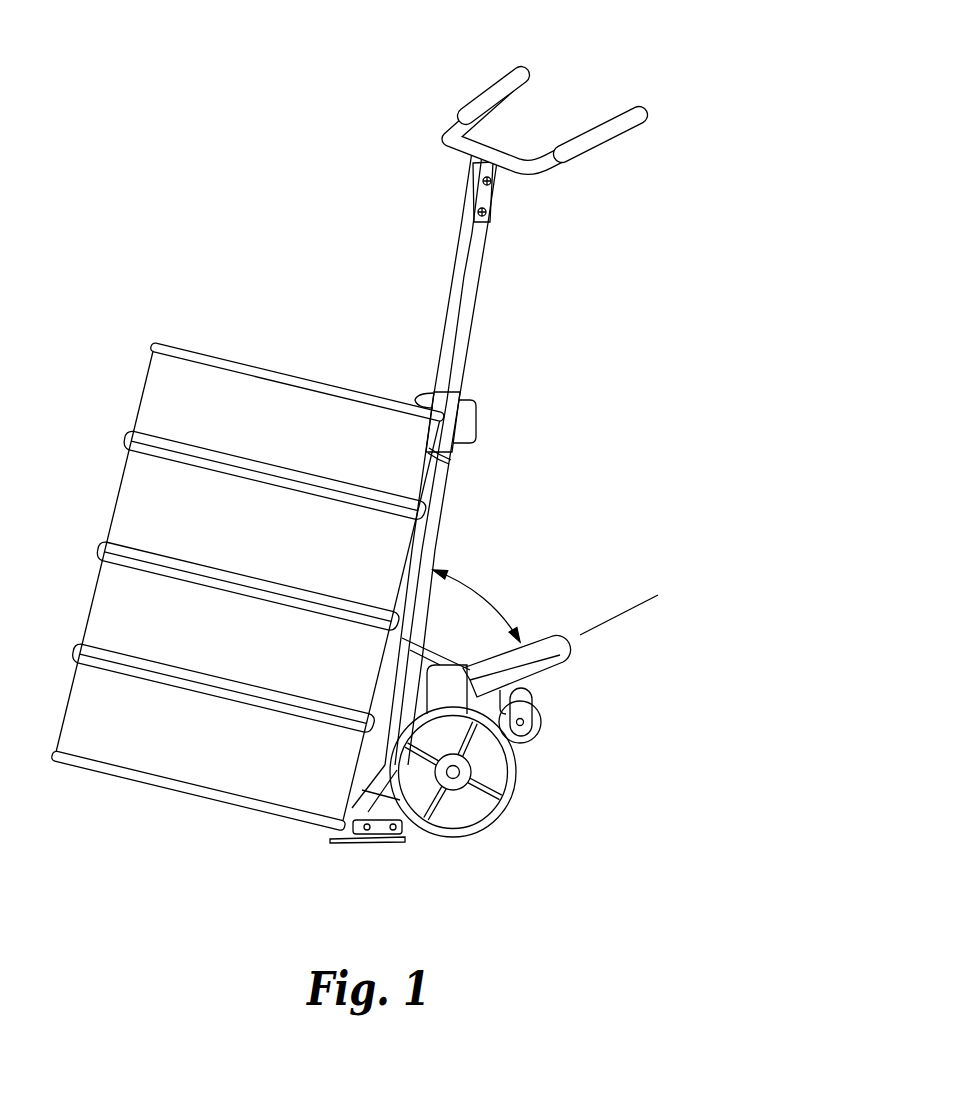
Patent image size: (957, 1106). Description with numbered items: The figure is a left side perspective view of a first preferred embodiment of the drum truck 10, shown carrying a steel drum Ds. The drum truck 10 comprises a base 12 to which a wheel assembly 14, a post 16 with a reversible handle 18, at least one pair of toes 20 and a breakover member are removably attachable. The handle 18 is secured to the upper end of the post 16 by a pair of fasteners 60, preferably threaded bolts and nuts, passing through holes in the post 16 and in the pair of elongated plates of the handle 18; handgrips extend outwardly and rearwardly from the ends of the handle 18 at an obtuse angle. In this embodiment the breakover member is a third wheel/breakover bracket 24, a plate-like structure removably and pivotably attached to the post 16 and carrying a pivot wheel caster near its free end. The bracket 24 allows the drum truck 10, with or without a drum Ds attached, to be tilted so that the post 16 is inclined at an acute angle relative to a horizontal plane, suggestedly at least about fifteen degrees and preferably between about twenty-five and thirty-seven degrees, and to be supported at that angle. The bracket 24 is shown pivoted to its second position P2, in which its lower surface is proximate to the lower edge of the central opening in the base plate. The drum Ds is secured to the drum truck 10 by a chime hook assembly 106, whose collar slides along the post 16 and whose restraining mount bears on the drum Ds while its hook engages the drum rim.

The drum truck 10 is at (698, 55).
The base 12 is at (440, 651).
The wheel assembly 14 is at (528, 797).
The post 16 is at (480, 310).
The reversible handle 18 is at (434, 100).
The toes 20 is at (403, 858).
The 3rd wheel/breakover bracket 24 is at (560, 664).
The fasteners 60 is at (486, 212).
The chime hook assembly 106 is at (477, 417).
The drum Ds is at (146, 392).
The second position P2 is at (637, 609).